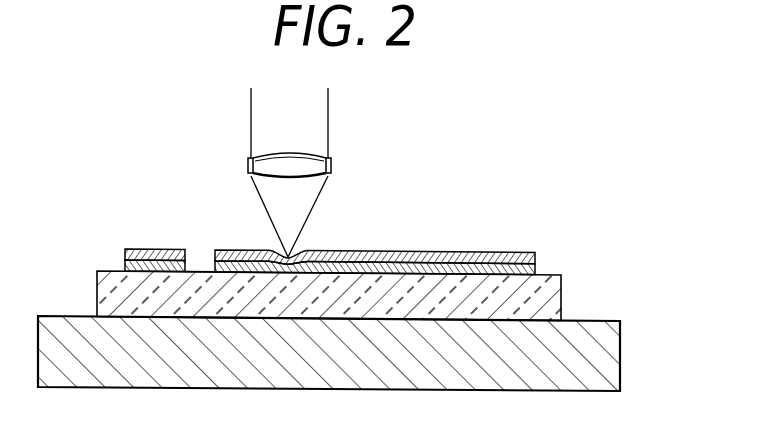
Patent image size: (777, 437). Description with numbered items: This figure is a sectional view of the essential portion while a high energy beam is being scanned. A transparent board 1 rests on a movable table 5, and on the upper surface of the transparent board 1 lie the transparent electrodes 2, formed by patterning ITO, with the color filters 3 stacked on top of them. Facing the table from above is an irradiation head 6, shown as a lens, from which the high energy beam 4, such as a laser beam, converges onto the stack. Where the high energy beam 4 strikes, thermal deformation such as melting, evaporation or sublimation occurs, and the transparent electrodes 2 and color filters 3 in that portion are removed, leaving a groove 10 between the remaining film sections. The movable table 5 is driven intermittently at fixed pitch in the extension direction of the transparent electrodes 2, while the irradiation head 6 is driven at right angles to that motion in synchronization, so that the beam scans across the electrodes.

The transparent board 1 is at (557, 297).
The transparent electrodes 2 is at (537, 265).
The color filters 3 is at (507, 252).
The high energy beam 4 is at (315, 207).
The movable table 5 is at (612, 345).
The irradiation head 6 is at (333, 164).
The groove 10 is at (203, 258).